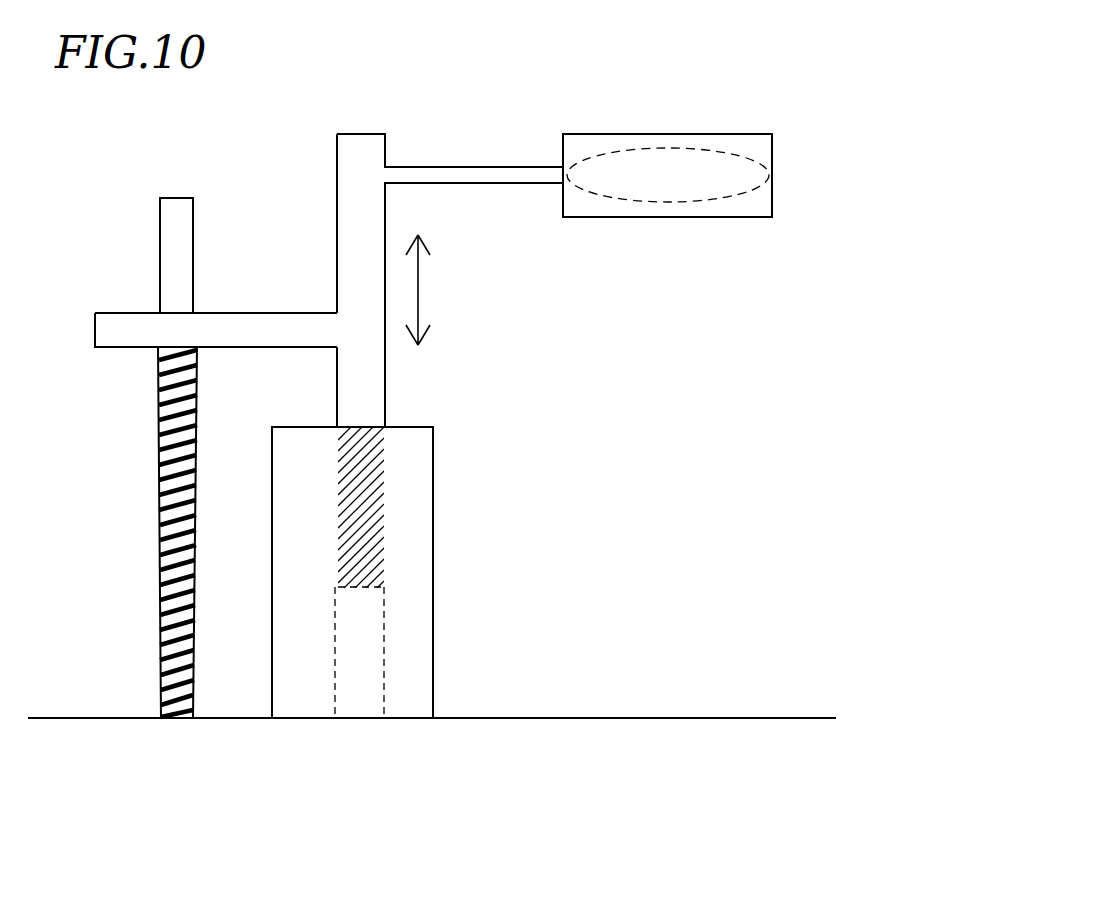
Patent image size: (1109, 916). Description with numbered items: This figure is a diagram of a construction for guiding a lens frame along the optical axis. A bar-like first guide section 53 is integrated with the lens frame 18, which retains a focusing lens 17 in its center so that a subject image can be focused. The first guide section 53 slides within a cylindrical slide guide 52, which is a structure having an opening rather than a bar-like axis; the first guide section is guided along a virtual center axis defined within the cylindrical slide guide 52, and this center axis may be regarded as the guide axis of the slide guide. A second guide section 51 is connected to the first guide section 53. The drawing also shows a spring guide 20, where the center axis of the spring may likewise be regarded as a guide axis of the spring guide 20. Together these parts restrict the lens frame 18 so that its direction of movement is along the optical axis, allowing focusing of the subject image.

The focusing lens 17 is at (713, 182).
The lens frame 18 is at (763, 150).
The spring guide 20 is at (178, 200).
The second guide section 51 is at (128, 312).
The cylindrical slide guide 52 is at (407, 702).
The first guide section 53 is at (368, 150).